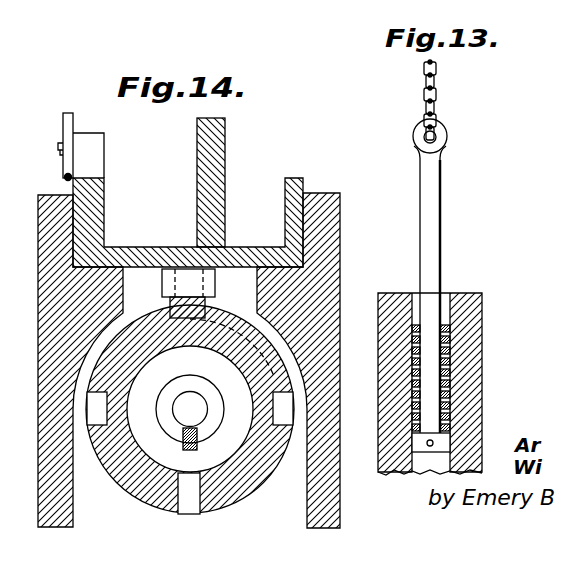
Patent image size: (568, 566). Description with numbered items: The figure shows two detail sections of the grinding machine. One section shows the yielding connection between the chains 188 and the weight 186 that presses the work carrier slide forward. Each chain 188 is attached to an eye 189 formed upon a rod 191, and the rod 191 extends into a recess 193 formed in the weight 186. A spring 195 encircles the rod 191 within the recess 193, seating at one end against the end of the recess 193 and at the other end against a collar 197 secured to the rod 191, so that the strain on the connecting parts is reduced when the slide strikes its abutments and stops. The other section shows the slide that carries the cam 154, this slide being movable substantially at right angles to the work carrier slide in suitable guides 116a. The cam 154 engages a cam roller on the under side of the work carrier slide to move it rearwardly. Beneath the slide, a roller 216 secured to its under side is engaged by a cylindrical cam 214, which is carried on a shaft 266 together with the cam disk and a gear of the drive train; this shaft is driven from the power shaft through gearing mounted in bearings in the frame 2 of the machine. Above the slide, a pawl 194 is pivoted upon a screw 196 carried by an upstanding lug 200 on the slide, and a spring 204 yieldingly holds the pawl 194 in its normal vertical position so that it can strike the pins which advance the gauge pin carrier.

In FIG. 14, the frame 2 is at (330, 432).
In FIG. 14, the guides 116a is at (75, 233).
In FIG. 14, the cam 154 is at (215, 153).
In FIG. 14, the pawl 194 is at (78, 102).
In FIG. 14, the screw 196 is at (58, 143).
In FIG. 14, the upstanding lug 200 is at (104, 133).
In FIG. 14, the spring 204 is at (64, 177).
In FIG. 14, the cylindrical cam 214 is at (252, 342).
In FIG. 14, the roller 216 is at (205, 298).
In FIG. 14, the shaft 266 is at (198, 408).
In FIG. 13, the chains 188 is at (438, 97).
In FIG. 13, the eye 189 is at (444, 139).
In FIG. 13, the rod 191 is at (428, 230).
In FIG. 13, the weight 186 is at (465, 335).
In FIG. 13, the spring 195 is at (415, 338).
In FIG. 13, the recess 193 is at (480, 447).
In FIG. 13, the collar 197 is at (415, 443).